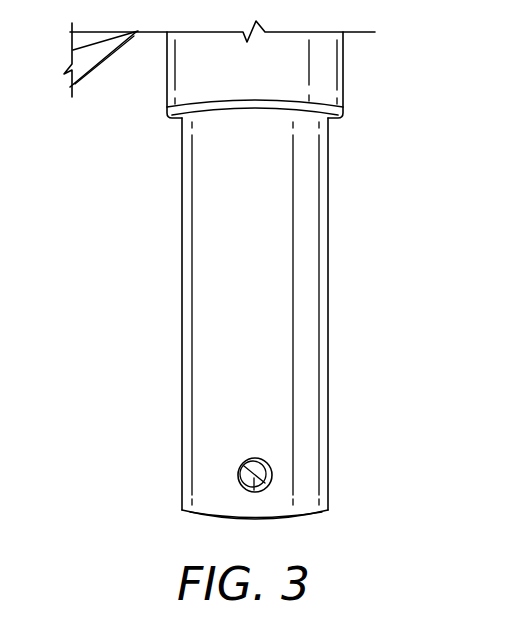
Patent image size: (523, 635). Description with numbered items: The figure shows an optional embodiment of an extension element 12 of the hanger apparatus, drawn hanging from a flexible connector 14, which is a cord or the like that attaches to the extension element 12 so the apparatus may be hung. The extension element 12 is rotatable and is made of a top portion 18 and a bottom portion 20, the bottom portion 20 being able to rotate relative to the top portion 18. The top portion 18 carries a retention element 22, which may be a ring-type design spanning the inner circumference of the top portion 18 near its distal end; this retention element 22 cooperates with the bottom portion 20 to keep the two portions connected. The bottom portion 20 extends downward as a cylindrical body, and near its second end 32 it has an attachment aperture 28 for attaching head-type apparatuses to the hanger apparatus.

The extension element 12 is at (182, 262).
The flexible connector 14 is at (96, 64).
The top portion 18 is at (344, 62).
The bottom portion 20 is at (182, 345).
The retention element 22 is at (177, 125).
The attachment aperture 28 is at (238, 475).
The second end 32 is at (182, 507).